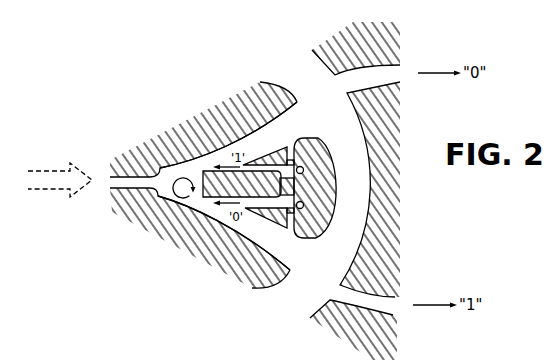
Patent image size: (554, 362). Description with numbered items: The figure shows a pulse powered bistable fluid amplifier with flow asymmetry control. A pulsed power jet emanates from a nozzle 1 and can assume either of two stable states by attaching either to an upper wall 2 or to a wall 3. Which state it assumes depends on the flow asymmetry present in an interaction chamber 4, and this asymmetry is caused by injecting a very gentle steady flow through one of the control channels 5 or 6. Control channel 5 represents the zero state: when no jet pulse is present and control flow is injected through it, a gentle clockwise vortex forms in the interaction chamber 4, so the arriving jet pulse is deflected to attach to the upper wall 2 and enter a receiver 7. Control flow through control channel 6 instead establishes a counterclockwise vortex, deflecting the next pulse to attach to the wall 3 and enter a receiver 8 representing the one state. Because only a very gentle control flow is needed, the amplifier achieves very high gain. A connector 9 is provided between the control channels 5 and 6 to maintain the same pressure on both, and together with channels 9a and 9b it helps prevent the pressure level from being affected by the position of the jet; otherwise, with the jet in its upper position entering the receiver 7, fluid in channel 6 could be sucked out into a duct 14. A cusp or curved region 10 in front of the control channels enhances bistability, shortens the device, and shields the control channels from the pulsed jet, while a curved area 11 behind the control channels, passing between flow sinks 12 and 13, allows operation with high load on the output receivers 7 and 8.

The nozzle 1 is at (136, 189).
The upper wall 2 is at (222, 138).
The wall 3 is at (213, 221).
The interaction chamber 4 is at (178, 195).
The control channel 5 is at (303, 204).
The control channel 6 is at (303, 168).
The receiver 7 is at (402, 72).
The receiver 8 is at (392, 303).
The connector 9 is at (283, 189).
The channel 9a is at (284, 229).
The channel 9b is at (295, 146).
The cusp or curved region 10 is at (198, 180).
The curved area 11 is at (333, 244).
The flow sink 12 is at (283, 303).
The flow sink 13 is at (297, 73).
The duct 14 is at (250, 107).